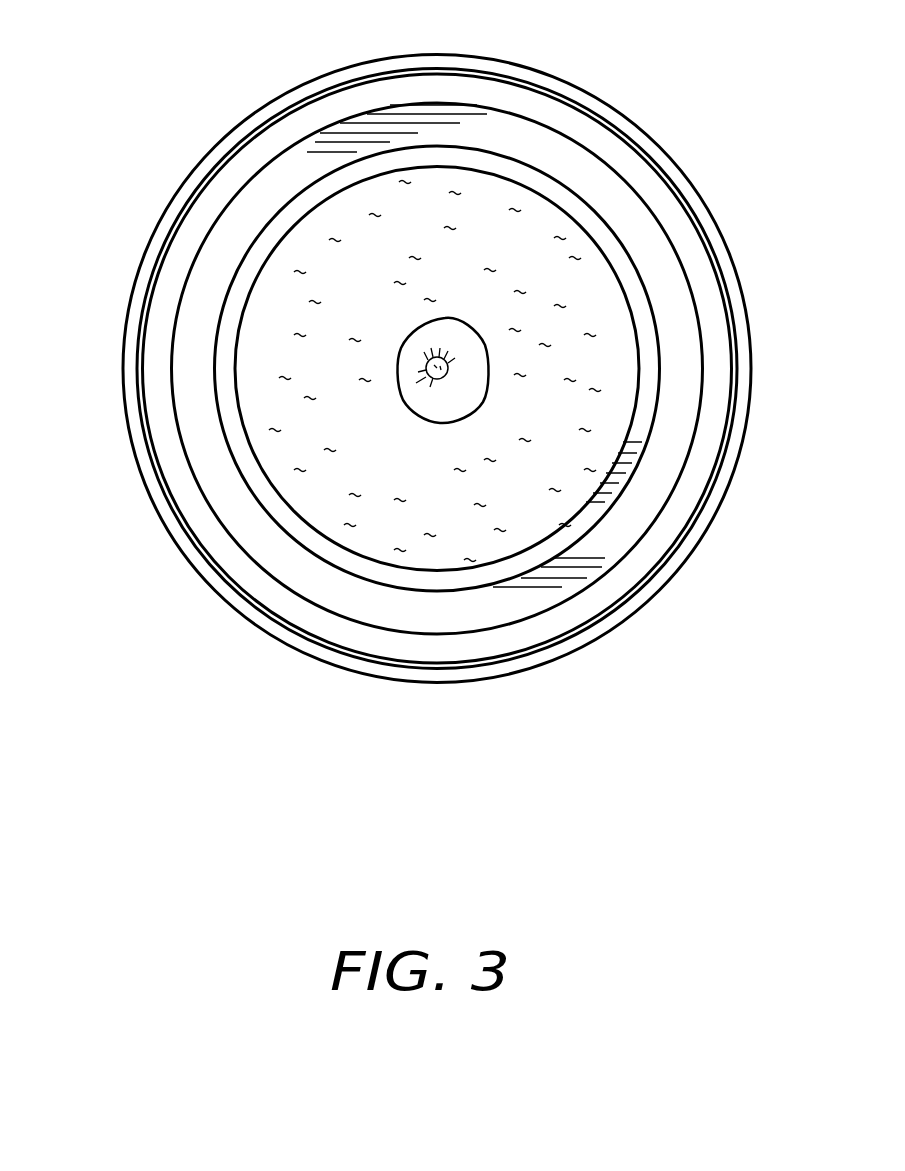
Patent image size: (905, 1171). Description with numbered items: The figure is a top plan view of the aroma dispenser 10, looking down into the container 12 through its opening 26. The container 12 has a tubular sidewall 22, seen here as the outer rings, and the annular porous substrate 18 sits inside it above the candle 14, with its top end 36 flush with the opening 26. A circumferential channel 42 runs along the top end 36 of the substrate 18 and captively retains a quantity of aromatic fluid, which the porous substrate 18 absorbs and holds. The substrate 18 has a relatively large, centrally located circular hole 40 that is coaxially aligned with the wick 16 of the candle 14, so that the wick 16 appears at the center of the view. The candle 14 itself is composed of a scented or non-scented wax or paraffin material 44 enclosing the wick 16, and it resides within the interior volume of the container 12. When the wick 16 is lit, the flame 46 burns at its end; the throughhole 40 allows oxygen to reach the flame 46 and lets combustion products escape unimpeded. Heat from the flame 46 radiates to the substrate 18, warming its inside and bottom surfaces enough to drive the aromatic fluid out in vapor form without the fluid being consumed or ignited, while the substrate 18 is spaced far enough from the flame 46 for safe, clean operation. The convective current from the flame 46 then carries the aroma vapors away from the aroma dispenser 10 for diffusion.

The aroma dispenser 10 is at (708, 63).
The container 12 is at (458, 683).
The candle 14 is at (377, 323).
The wick 16 is at (440, 350).
The annular porous substrate 18 is at (266, 230).
The tubular sidewall 22 is at (123, 415).
The opening 26 is at (680, 556).
The top end 36 is at (658, 193).
The circular hole 40 is at (653, 362).
The circumferential channel 42 is at (667, 273).
The wax or paraffin material 44 is at (360, 513).
The flame 46 is at (442, 387).